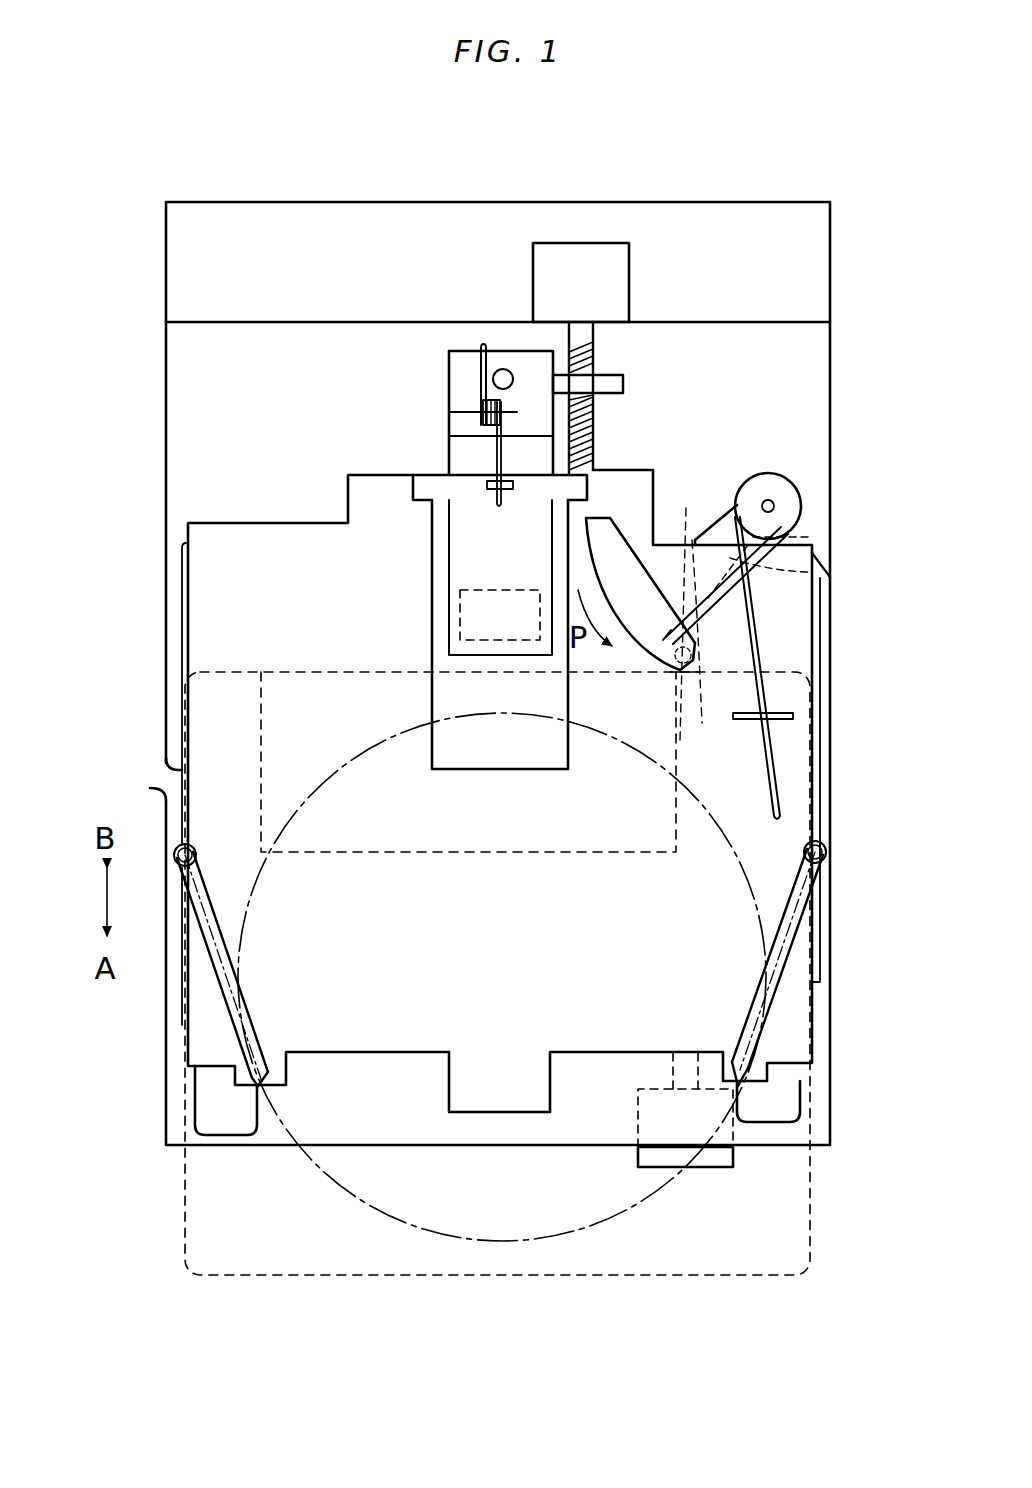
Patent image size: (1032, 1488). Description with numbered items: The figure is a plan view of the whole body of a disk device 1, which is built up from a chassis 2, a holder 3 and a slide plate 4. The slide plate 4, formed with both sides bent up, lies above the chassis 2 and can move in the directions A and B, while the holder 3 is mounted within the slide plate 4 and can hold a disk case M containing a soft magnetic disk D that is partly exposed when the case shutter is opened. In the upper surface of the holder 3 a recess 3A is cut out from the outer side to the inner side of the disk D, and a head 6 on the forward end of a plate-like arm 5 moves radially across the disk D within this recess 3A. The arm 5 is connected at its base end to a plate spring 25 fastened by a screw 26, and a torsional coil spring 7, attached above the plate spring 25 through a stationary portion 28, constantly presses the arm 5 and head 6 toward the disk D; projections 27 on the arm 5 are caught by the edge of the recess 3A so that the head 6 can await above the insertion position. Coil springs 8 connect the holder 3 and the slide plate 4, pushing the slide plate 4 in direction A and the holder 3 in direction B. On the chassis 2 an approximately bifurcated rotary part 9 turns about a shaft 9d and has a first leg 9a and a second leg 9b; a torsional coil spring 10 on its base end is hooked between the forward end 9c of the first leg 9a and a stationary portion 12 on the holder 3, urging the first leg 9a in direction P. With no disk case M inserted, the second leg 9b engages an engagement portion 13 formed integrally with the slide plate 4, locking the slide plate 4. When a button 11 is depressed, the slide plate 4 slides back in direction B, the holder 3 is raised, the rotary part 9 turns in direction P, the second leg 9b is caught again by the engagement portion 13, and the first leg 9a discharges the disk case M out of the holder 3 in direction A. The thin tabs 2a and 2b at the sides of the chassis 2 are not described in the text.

The disk device 1 is at (635, 200).
The chassis 2 is at (833, 360).
The pivot tab 2a is at (150, 788).
The guide tab 2b is at (180, 770).
The holder 3 is at (198, 585).
The recess 3A is at (432, 755).
The slide plate 4 is at (822, 665).
The arm 5 is at (465, 545).
The head 6 is at (460, 612).
The torsional coil spring 7 is at (478, 372).
The coil springs 8 is at (225, 982).
The rotary part 9 is at (794, 492).
The first leg 9a is at (688, 607).
The second leg 9b is at (831, 575).
The forward end 9c is at (687, 674).
The shaft 9d is at (766, 504).
The torsional coil spring 10 is at (783, 806).
The button 11 is at (705, 1168).
The stationary portion 12 is at (622, 548).
The engagement portion 13 is at (765, 540).
The plate spring 25 is at (460, 395).
The screw 26 is at (503, 369).
The projections 27 is at (418, 488).
The stationary portion 28 is at (468, 413).
The magnetic disk D is at (390, 1233).
The disk case M is at (518, 1275).